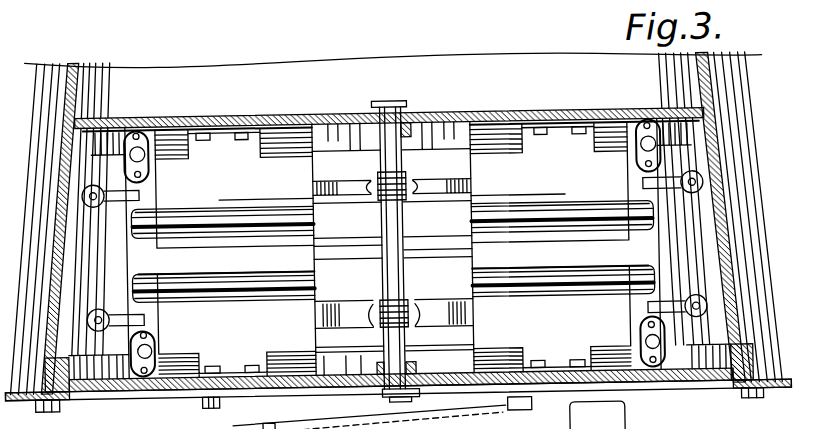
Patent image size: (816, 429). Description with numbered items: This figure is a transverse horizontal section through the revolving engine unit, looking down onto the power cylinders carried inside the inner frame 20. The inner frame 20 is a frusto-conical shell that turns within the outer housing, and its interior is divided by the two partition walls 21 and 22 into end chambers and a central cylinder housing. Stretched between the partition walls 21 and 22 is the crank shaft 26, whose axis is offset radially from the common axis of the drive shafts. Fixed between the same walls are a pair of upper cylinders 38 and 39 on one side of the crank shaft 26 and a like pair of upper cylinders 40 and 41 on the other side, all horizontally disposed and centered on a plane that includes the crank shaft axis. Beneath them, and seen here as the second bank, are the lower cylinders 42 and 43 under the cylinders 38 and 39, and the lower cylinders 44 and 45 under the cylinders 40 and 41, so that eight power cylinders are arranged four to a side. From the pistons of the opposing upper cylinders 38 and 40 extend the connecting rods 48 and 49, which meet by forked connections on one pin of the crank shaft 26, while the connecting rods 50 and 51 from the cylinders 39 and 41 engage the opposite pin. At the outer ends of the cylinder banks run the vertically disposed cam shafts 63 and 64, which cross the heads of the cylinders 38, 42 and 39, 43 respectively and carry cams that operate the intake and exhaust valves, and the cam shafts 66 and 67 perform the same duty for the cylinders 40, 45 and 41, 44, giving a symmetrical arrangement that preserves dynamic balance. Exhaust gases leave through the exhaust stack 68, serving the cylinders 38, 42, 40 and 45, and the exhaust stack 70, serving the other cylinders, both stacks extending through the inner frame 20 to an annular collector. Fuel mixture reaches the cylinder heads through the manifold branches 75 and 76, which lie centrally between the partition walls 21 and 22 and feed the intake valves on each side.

The inner frame 20 is at (777, 395).
The partition wall 21 is at (694, 386).
The partition wall 22 is at (614, 108).
The crank shaft 26 is at (397, 218).
The upper cylinder 38 is at (236, 324).
The upper cylinder 39 is at (198, 188).
The upper cylinder 40 is at (551, 319).
The upper cylinder 41 is at (585, 182).
The lower cylinder 42 is at (223, 304).
The lower cylinder 43 is at (221, 199).
The lower cylinder 44 is at (562, 197).
The lower cylinder 45 is at (563, 304).
The connecting rod 48 is at (359, 308).
The connecting rod 49 is at (425, 310).
The connecting rod 50 is at (352, 186).
The connecting rod 51 is at (439, 186).
The cam shaft 63 is at (92, 304).
The cam shaft 64 is at (94, 203).
The cam shaft 66 is at (693, 300).
The cam shaft 67 is at (688, 198).
The exhaust stack 68 is at (149, 373).
The exhaust stack 70 is at (140, 145).
The manifold branch 75 is at (350, 243).
The manifold branch 76 is at (407, 259).